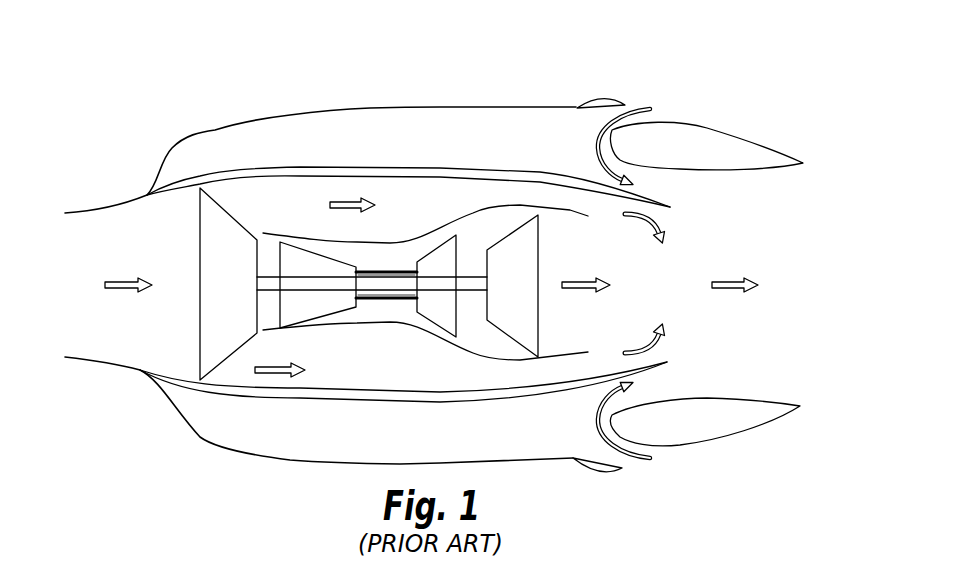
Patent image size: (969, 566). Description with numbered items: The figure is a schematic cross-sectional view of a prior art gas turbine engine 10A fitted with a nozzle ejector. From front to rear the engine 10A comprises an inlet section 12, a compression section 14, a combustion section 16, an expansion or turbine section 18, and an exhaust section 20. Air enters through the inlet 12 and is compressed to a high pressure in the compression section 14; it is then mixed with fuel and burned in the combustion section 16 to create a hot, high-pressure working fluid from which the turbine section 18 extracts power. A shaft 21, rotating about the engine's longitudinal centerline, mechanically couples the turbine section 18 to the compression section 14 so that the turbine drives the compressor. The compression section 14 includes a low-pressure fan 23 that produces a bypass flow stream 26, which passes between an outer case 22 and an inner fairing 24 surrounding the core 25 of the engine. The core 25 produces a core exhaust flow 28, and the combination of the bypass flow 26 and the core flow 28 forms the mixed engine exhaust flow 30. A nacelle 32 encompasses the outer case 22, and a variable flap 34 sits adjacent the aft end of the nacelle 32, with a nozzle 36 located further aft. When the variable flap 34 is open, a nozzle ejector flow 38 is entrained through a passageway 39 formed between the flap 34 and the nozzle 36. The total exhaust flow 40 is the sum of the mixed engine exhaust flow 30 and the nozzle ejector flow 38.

The gas turbine engine 10A is at (471, 76).
The inlet section 12 is at (137, 320).
The compression section 14 is at (239, 369).
The combustion section 16 is at (380, 307).
The turbine section 18 is at (461, 335).
The exhaust section 20 is at (721, 330).
The shaft 21 is at (377, 258).
The outer case 22 is at (378, 167).
The low-pressure fan 23 is at (220, 235).
The inner fairing 24 is at (470, 218).
The core 25 is at (397, 308).
The bypass flow stream 26 is at (340, 200).
The core exhaust flow 28 is at (575, 280).
The mixed engine exhaust flow 30 is at (637, 219).
The nacelle 32 is at (316, 107).
The variable flap 34 is at (590, 97).
The nozzle 36 is at (712, 425).
The nozzle ejector flow 38 is at (651, 107).
The passageway 39 is at (628, 107).
The total exhaust flow 40 is at (727, 280).